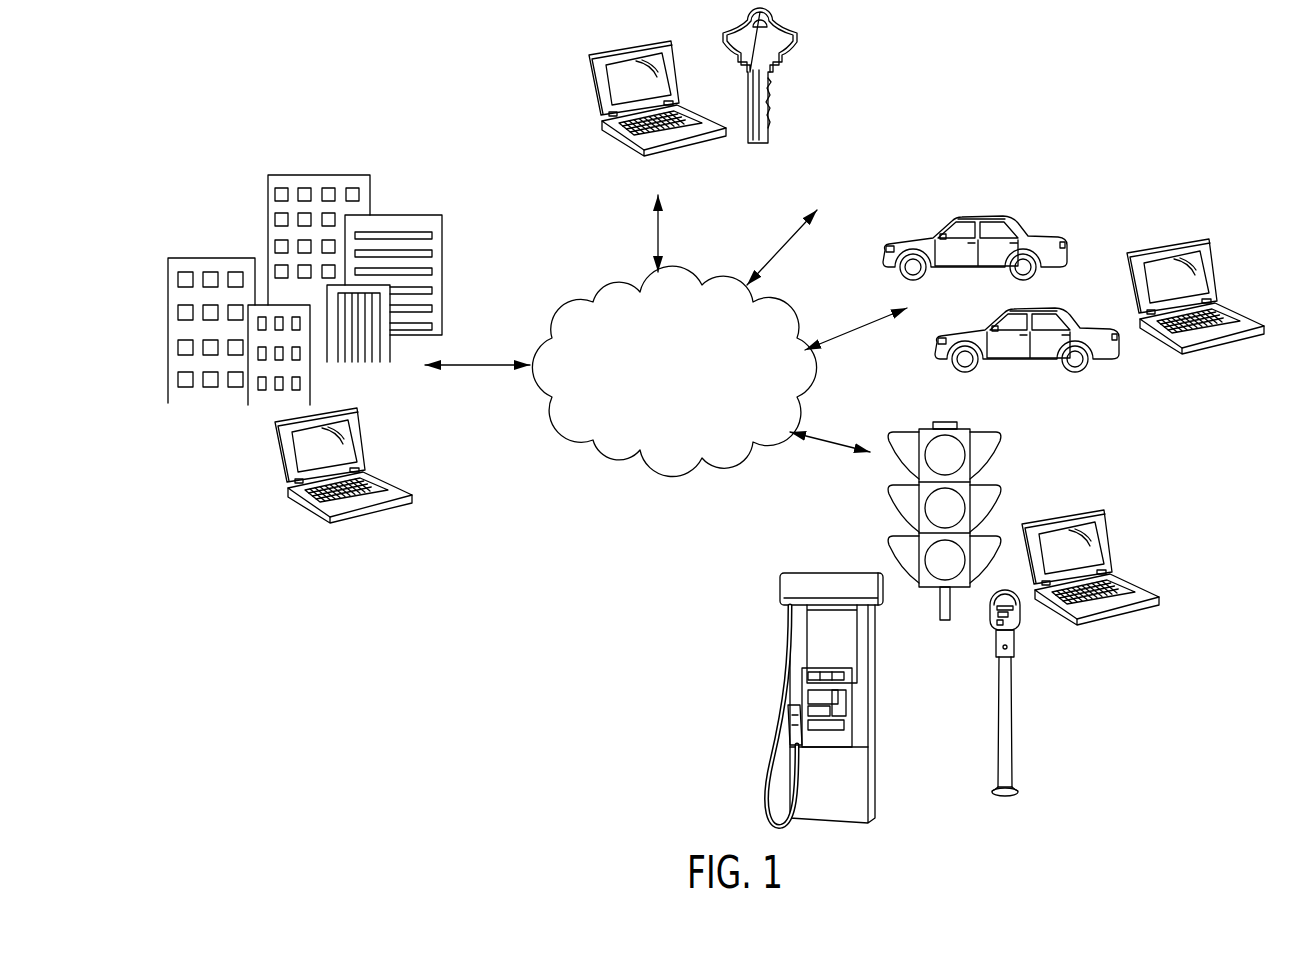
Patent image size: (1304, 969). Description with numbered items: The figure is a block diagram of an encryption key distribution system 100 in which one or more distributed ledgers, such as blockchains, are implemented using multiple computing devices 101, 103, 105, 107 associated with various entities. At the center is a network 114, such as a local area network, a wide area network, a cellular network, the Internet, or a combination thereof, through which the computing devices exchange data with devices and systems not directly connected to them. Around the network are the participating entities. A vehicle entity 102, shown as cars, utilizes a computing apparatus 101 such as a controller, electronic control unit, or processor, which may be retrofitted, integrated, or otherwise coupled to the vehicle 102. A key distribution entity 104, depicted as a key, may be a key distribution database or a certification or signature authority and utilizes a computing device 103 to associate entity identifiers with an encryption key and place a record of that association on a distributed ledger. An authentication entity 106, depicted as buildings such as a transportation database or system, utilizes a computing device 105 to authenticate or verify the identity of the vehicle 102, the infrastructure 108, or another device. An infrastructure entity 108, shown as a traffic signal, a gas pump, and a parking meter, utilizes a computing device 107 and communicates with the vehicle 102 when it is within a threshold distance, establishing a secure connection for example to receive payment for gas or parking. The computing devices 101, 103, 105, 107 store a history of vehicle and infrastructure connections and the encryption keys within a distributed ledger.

The encryption key distribution system 100 is at (146, 140).
The computing apparatus 101 is at (1220, 273).
The vehicle entity 102 is at (1085, 368).
The computing device 103 is at (695, 122).
The key distribution entity 104 is at (773, 75).
The computing device 105 is at (362, 515).
The authentication entity 106 is at (430, 255).
The computing device 107 is at (1152, 605).
The infrastructure entity 108 is at (1012, 720).
The network 114 is at (672, 463).